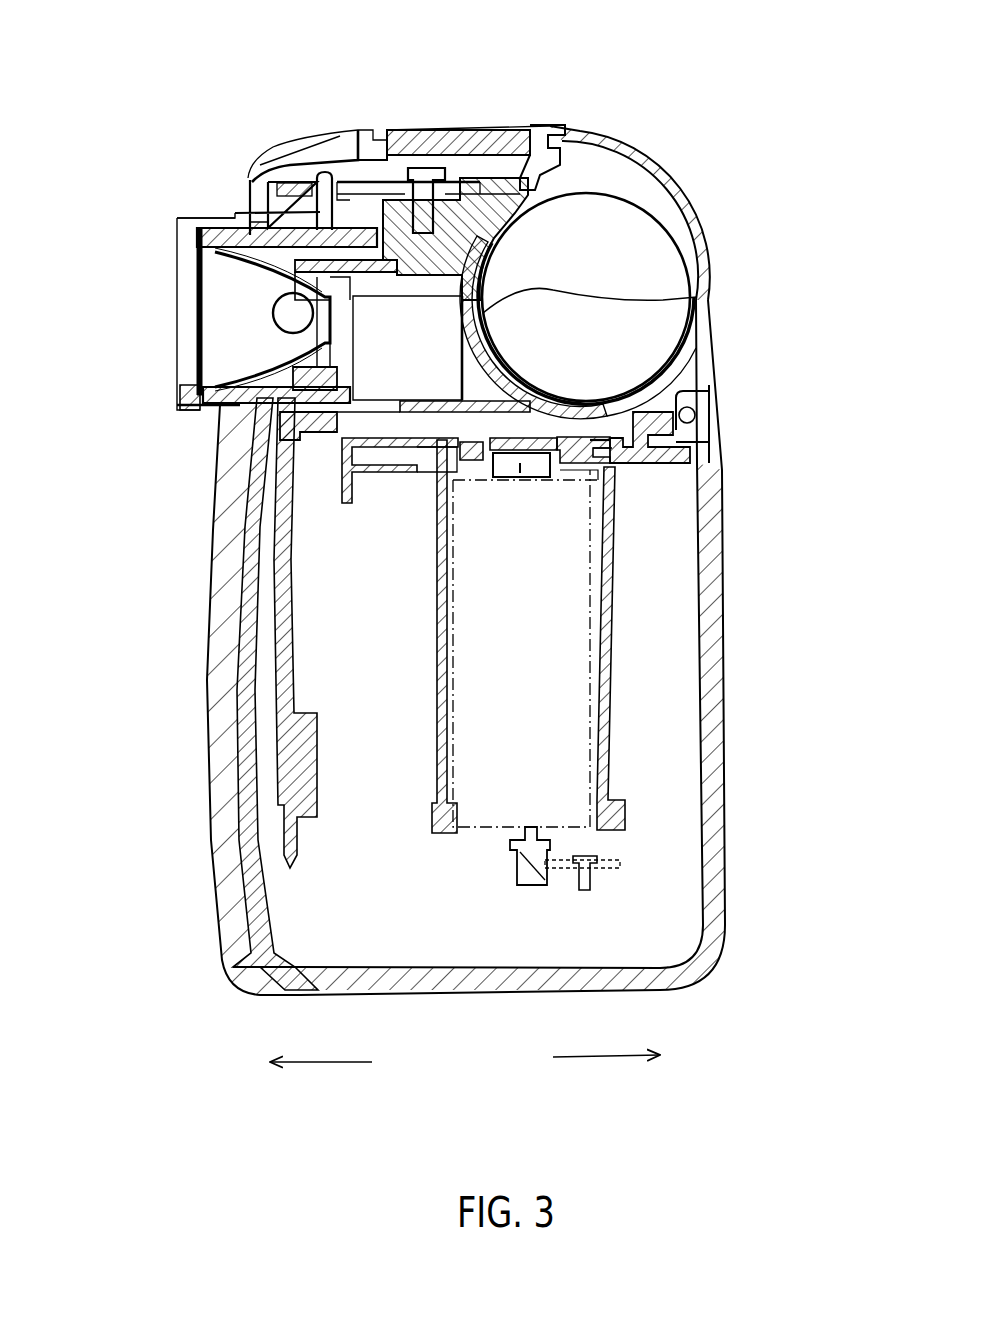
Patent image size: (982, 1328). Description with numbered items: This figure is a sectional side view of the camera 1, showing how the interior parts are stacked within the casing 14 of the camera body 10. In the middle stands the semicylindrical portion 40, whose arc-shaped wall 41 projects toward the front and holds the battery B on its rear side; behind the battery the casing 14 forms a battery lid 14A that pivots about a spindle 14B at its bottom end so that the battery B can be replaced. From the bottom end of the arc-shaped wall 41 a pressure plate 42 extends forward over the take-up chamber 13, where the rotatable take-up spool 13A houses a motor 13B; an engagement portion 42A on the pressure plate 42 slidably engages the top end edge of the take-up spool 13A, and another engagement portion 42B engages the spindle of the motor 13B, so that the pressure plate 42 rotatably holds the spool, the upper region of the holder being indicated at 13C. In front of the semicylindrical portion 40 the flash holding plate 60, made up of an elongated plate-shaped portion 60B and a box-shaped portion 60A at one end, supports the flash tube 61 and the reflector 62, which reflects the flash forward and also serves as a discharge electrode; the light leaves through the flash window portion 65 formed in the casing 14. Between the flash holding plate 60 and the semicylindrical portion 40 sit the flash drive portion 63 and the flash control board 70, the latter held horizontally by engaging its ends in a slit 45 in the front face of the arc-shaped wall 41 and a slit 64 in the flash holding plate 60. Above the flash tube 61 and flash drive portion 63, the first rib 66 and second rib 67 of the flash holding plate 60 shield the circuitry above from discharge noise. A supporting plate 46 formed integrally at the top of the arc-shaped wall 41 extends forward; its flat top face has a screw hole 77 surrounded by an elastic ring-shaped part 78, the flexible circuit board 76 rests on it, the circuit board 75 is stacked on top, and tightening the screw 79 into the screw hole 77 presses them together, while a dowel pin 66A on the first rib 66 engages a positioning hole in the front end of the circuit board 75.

The camera 1 is at (614, 72).
The camera body 10 is at (690, 463).
The take-up chamber 13 is at (662, 640).
The take-up spool 13A is at (606, 675).
The motor 13B is at (560, 706).
The holder upper portion 13C is at (523, 480).
The casing 14 is at (705, 735).
The battery lid 14A is at (672, 165).
The spindle 14B is at (702, 413).
The semicylindrical portion 40 is at (649, 327).
The arc-shaped wall 41 is at (700, 300).
The pressure plate 42 is at (650, 372).
The engagement portion 42A is at (458, 458).
The engagement portion 42B is at (490, 472).
The slit 45 is at (665, 412).
The supporting plate 46 is at (488, 140).
The flash holding plate 60 is at (246, 680).
The box-shaped portion 60A is at (190, 393).
The plate-shaped portion 60B is at (272, 645).
The flash tube 61 is at (278, 312).
The reflector 62 is at (262, 264).
The flash drive portion 63 is at (262, 398).
The slit 64 is at (275, 412).
The flash window portion 65 is at (190, 340).
The first rib 66 is at (235, 240).
The dowel pin 66A is at (255, 198).
The second rib 67 is at (365, 272).
The flash control board 70 is at (298, 415).
The circuit board 75 is at (362, 190).
The flexible circuit board 76 is at (357, 186).
The screw hole 77 is at (475, 235).
The ring-shaped part 78 is at (404, 188).
The screw 79 is at (422, 168).
The battery B is at (645, 232).